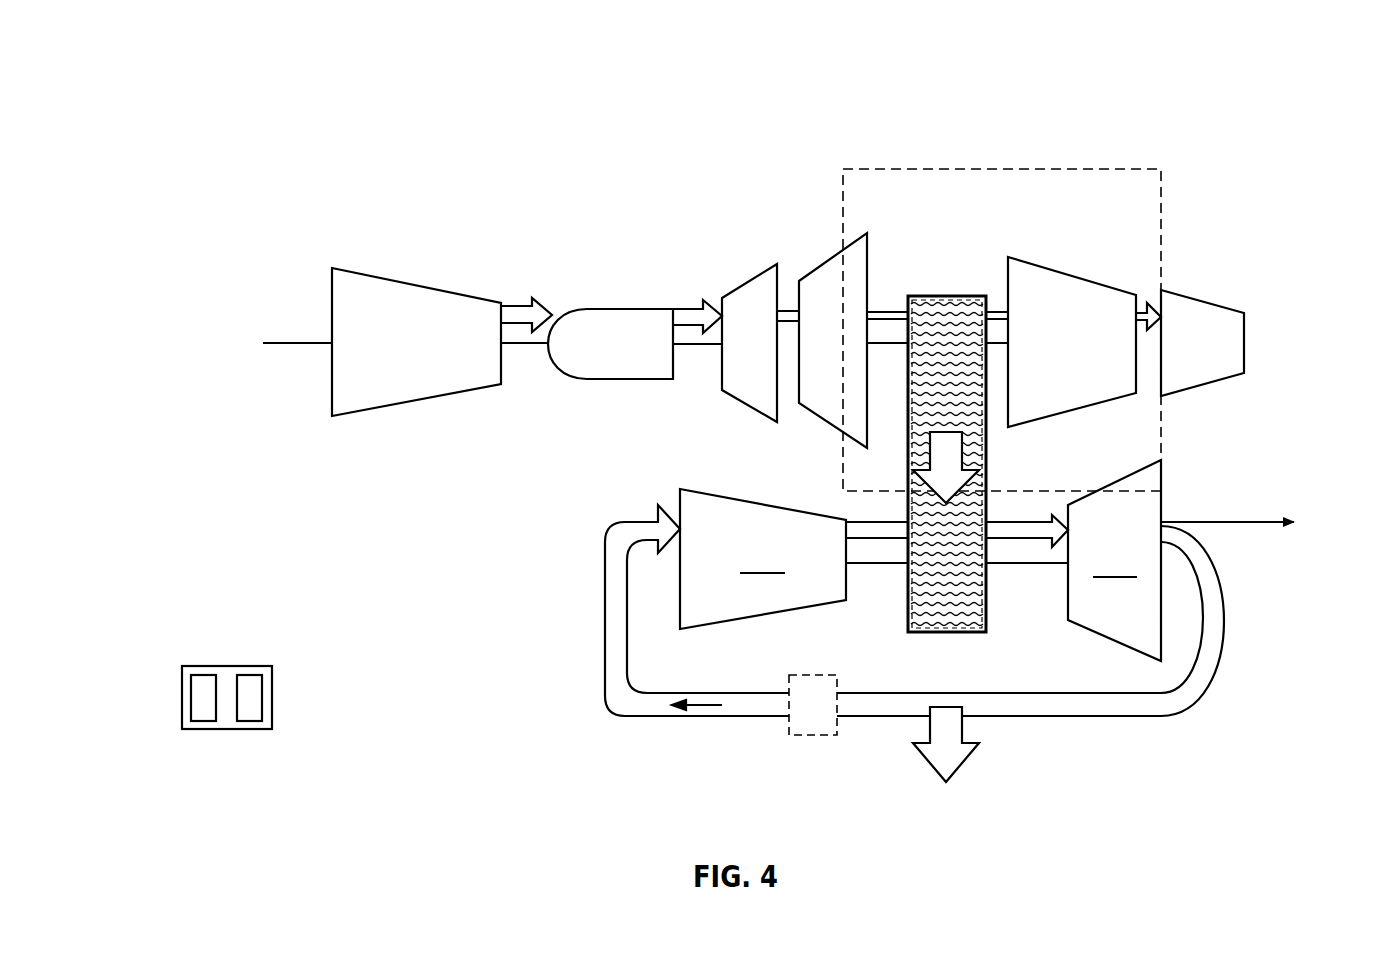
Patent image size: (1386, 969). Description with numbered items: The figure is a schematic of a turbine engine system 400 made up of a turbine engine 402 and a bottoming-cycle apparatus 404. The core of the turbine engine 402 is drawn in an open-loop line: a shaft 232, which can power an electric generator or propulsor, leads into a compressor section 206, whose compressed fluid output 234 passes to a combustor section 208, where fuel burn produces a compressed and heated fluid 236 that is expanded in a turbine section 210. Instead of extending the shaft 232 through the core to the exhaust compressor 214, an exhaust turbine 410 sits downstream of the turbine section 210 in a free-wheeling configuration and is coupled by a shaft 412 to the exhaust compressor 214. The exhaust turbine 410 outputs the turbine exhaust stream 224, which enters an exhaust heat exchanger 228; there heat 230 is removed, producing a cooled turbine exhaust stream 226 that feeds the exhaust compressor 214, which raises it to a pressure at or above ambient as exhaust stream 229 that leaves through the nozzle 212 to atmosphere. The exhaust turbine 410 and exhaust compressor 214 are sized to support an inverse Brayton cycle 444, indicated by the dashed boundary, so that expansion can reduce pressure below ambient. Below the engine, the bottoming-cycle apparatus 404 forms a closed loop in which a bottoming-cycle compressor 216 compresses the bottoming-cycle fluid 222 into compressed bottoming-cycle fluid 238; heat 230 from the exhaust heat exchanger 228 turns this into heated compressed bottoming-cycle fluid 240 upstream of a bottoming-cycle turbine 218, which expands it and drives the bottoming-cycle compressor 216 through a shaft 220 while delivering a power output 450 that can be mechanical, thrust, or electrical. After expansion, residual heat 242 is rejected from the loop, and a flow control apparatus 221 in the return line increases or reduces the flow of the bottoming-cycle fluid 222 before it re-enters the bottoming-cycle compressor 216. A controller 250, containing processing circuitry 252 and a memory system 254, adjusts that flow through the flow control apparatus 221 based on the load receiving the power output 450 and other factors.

The turbine engine system 400 is at (582, 94).
The turbine engine 402 is at (802, 168).
The bottoming-cycle apparatus 404 is at (586, 814).
The compressor section 206 is at (420, 282).
The combustor section 208 is at (607, 309).
The turbine section 210 is at (766, 272).
The exhaust turbine 410 is at (838, 258).
The shaft 412 is at (870, 352).
The nozzle 212 is at (1193, 297).
The exhaust compressor 214 is at (1078, 272).
The bottoming-cycle compressor 216 is at (763, 559).
The bottoming-cycle turbine 218 is at (1114, 560).
The shaft 220 is at (1037, 563).
The flow control apparatus 221 is at (810, 675).
The bottoming-cycle fluid 222 is at (695, 717).
The turbine exhaust stream 224 is at (873, 312).
The cooled turbine exhaust stream 226 is at (994, 305).
The exhaust heat exchanger 228 is at (948, 296).
The exhaust stream 229 is at (1140, 305).
The heat 230 is at (988, 446).
The shaft 232 is at (300, 342).
The compressed fluid output 234 is at (517, 306).
The compressed and heated fluid 236 is at (697, 307).
The compressed bottoming-cycle fluid 238 is at (893, 520).
The heated compressed bottoming-cycle fluid 240 is at (1050, 518).
The residual heat 242 is at (965, 725).
The controller 250 is at (228, 666).
The processing circuitry 252 is at (203, 722).
The memory system 254 is at (250, 722).
The inverse Brayton cycle 444 is at (1109, 169).
The power output 450 is at (1270, 524).